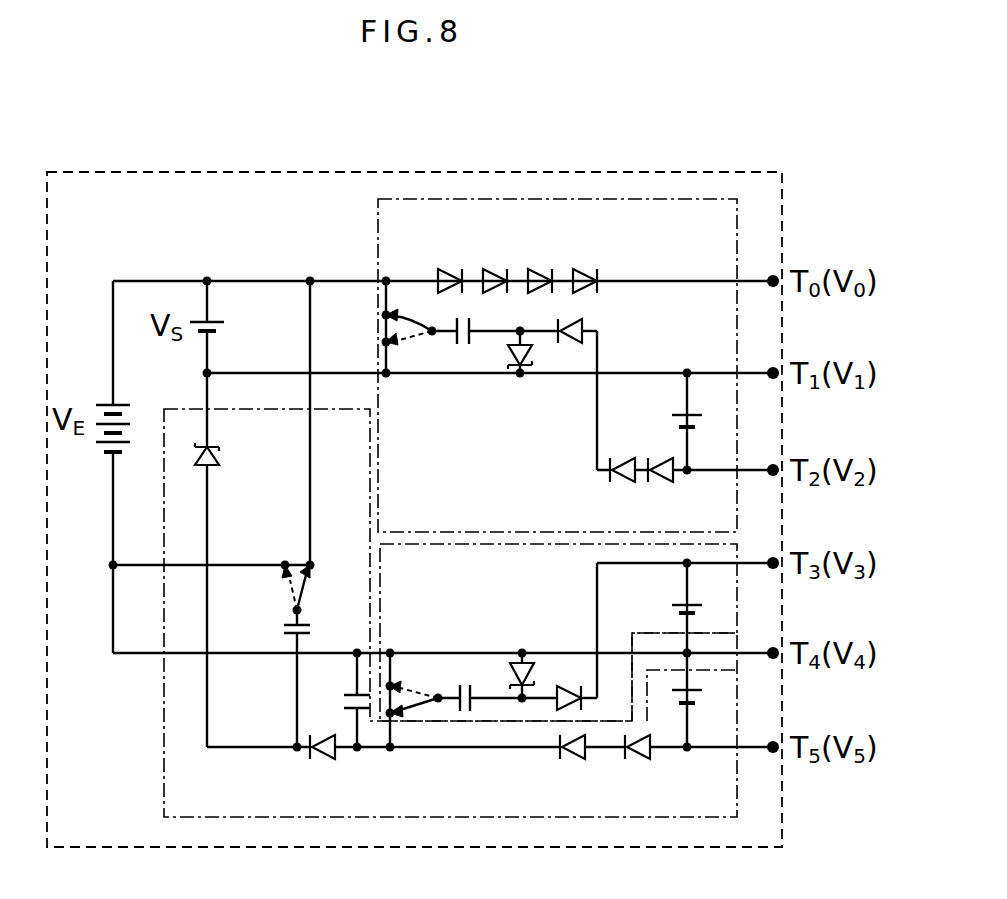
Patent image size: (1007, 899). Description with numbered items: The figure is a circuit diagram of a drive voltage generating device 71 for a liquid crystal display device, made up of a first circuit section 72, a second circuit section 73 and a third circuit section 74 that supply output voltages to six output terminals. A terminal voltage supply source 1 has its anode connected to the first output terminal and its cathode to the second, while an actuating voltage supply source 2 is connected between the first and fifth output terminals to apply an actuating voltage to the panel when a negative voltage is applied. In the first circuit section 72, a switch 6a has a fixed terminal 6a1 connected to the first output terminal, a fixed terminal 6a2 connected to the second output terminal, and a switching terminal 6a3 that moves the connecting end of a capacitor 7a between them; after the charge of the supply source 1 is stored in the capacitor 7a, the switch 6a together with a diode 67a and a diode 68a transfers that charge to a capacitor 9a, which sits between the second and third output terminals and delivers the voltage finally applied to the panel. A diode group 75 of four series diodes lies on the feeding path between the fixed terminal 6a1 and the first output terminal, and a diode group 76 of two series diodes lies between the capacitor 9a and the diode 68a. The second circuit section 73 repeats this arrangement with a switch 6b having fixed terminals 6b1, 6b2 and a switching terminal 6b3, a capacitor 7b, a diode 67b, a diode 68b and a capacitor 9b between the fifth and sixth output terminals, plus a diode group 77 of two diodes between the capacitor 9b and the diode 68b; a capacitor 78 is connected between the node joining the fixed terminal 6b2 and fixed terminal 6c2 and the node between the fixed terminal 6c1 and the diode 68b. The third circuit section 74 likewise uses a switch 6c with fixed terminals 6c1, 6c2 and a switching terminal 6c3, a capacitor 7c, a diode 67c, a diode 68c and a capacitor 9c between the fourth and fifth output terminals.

The drive voltage generating device 71 is at (701, 174).
The first circuit section 72 is at (592, 198).
The second circuit section 73 is at (160, 722).
The third circuit section 74 is at (740, 612).
The diode group 75 is at (606, 262).
The diode group 76 is at (680, 482).
The diode group 77 is at (660, 762).
The capacitor 78 is at (340, 698).
The terminal voltage supply source 1 is at (222, 334).
The actuating voltage supply source 2 is at (133, 436).
The switch 6a is at (413, 345).
The fixed terminal 6a1 is at (382, 313).
The fixed terminal 6a2 is at (380, 342).
The switching terminal 6a3 is at (432, 338).
The switch 6b is at (305, 598).
The fixed terminal 6b1 is at (308, 558).
The fixed terminal 6b2 is at (285, 557).
The switching terminal 6b3 is at (292, 607).
The switch 6c is at (418, 687).
The fixed terminal 6c1 is at (386, 733).
The fixed terminal 6c2 is at (393, 683).
The switching terminal 6c3 is at (436, 703).
The capacitor 7a is at (465, 344).
The capacitor 7b is at (285, 624).
The capacitor 7c is at (463, 685).
The capacitor 9a is at (672, 418).
The capacitor 9b is at (700, 690).
The capacitor 9c is at (675, 607).
The diode 67a is at (528, 352).
The diode 67b is at (215, 456).
The diode 67c is at (510, 665).
The diode 68a is at (585, 328).
The diode 68b is at (325, 762).
The diode 68c is at (567, 687).